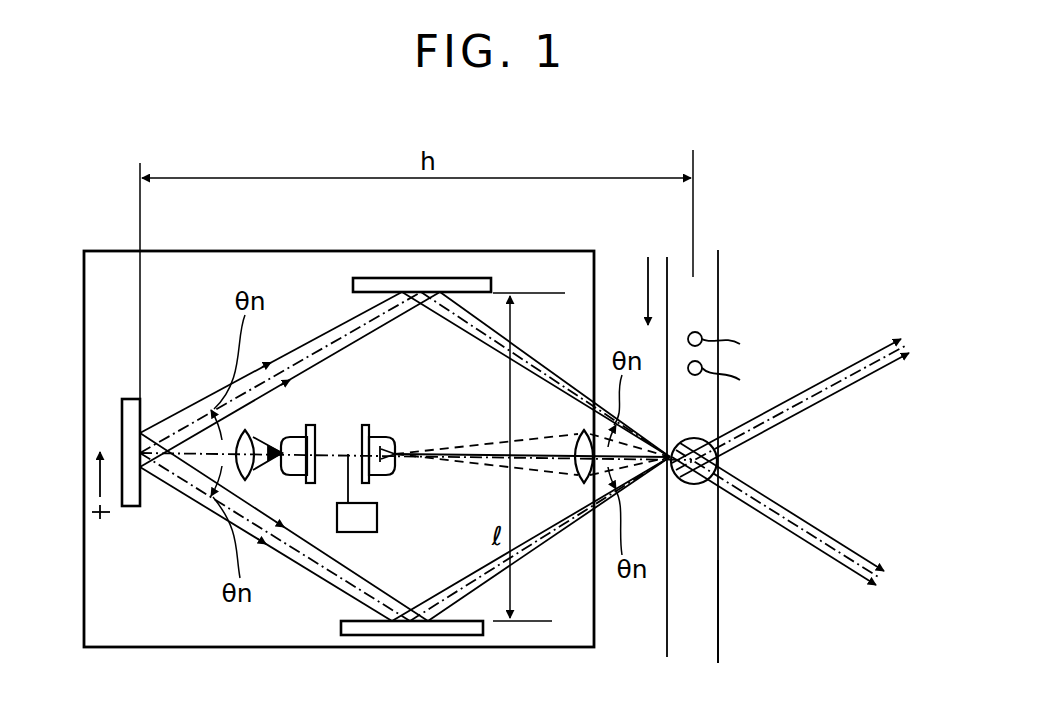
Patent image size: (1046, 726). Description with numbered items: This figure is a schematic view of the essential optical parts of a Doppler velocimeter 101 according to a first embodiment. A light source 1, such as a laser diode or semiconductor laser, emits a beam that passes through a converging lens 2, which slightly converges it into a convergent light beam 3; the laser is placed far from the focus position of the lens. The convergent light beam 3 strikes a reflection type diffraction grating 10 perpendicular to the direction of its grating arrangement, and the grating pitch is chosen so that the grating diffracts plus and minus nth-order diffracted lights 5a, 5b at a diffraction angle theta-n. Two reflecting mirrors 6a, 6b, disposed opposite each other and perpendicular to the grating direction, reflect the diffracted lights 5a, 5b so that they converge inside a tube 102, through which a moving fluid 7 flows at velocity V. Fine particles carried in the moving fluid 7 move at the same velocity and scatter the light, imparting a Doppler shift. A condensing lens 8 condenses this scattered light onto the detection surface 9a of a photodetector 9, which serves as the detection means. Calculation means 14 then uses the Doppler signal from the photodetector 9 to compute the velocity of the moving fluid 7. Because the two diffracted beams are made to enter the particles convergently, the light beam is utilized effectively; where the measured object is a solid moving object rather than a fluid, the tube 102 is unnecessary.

The light source 1 is at (292, 442).
The converging lens 2 is at (256, 436).
The convergent light beam 3 is at (258, 402).
The nth-order diffracted light 5a is at (170, 478).
The nth-order diffracted light 5b is at (186, 408).
The reflecting mirror 6a is at (454, 634).
The reflecting mirror 6b is at (446, 286).
The moving fluid 7 is at (710, 322).
The condensing lens 8 is at (578, 438).
The photodetector 9 is at (406, 458).
The detection surface 9a is at (395, 472).
The diffraction grating 10 is at (122, 430).
The calculation means 14 is at (372, 522).
The Doppler velocimeter 101 is at (106, 250).
The tube 102 is at (706, 614).